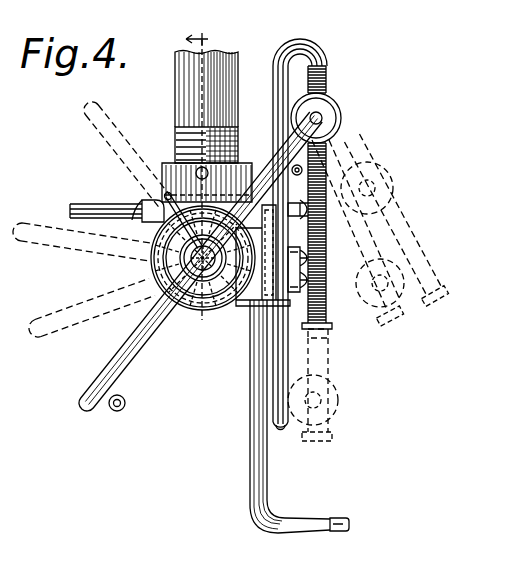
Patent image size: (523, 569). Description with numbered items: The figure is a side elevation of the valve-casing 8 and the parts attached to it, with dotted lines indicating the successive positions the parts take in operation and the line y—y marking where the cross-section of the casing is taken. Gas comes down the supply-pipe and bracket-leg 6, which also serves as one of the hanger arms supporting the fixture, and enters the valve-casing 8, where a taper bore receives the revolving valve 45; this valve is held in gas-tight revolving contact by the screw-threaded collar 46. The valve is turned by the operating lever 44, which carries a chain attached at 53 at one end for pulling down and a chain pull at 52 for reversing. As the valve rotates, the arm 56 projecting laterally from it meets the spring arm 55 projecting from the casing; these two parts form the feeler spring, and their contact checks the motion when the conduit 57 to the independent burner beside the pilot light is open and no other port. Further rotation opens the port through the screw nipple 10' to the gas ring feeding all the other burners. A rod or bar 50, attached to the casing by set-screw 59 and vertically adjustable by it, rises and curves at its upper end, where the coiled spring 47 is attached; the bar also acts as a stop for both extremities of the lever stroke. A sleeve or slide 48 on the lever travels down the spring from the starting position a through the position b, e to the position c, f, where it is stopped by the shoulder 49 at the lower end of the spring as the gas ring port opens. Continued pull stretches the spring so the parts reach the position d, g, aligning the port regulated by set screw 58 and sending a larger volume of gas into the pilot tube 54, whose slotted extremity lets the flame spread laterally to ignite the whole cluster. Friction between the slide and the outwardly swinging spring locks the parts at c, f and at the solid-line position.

The supply-pipe and bracket-leg 6 is at (176, 80).
The screw nipple 10' is at (189, 129).
The spring arm 55 is at (196, 168).
The arm 56 is at (165, 195).
The conduit 57 is at (95, 203).
The valve-casing 8 is at (150, 262).
The screw-threaded collar 46 is at (219, 312).
The revolving valve 45 is at (197, 302).
The operating lever 44 is at (98, 385).
The chain attachment point 52 is at (117, 411).
The chain attachment point 53 is at (290, 162).
The rod or bar 50 is at (289, 45).
The starting position of slide a is at (336, 104).
The sleeve or slide 48 is at (341, 116).
The coiled spring 47 is at (327, 312).
The set screw 58 is at (322, 222).
The set-screw 59 is at (316, 283).
The shoulder 49 is at (330, 332).
The final position of slide d is at (330, 402).
The final position of spring g is at (322, 437).
The feeler-contact position of slide b is at (372, 190).
The gas-ring position of slide c is at (387, 282).
The feeler-contact position of spring e is at (440, 298).
The gas-ring position of spring f is at (397, 320).
The pilot tube 54 is at (250, 456).
The section line y— y is at (197, 197).